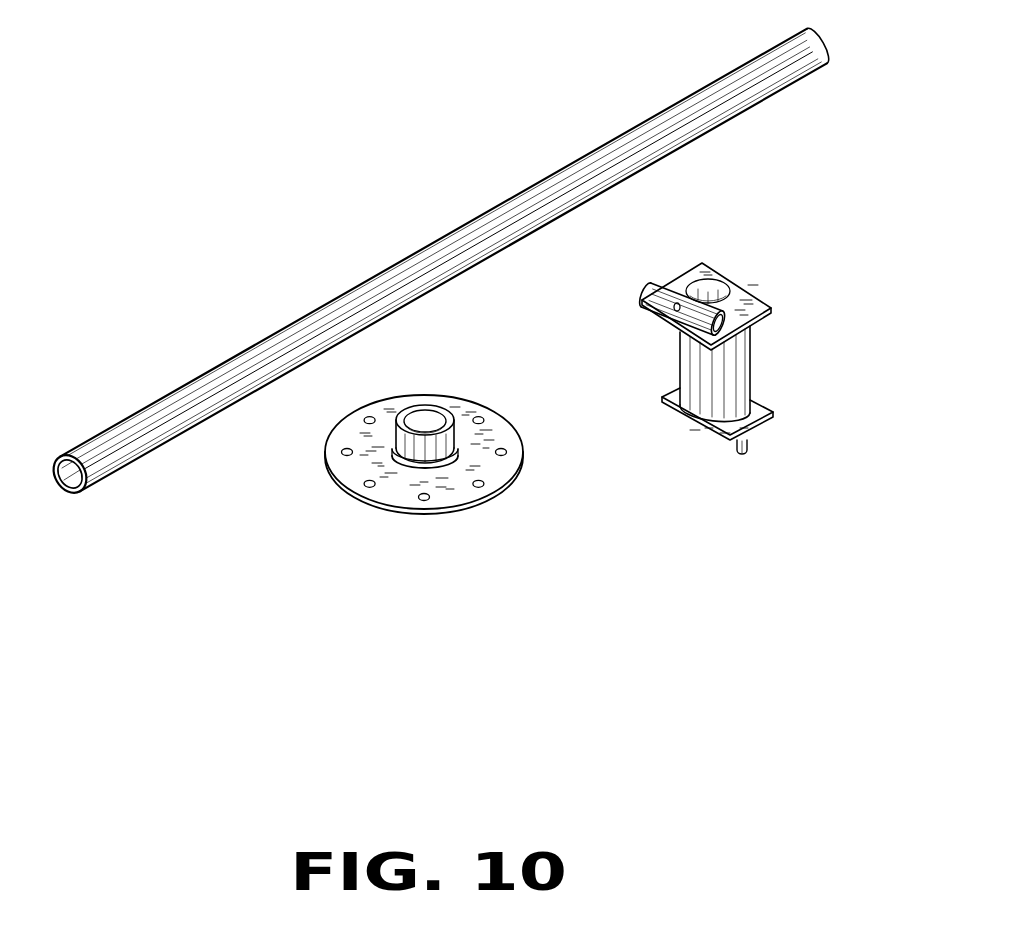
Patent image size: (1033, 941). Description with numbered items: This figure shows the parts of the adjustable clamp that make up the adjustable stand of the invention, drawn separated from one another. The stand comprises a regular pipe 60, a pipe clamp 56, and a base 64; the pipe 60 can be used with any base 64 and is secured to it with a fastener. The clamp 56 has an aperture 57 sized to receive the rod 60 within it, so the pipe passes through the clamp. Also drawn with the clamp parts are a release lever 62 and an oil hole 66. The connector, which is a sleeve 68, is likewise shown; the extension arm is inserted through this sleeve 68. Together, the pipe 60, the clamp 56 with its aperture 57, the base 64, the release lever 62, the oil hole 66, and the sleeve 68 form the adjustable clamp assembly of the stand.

The pipe clamp 56 is at (687, 370).
The aperture 57 is at (713, 292).
The pipe 60 is at (452, 240).
The release lever 62 is at (737, 447).
The base 64 is at (340, 466).
The oil hole 66 is at (647, 297).
The sleeve 68 is at (768, 322).